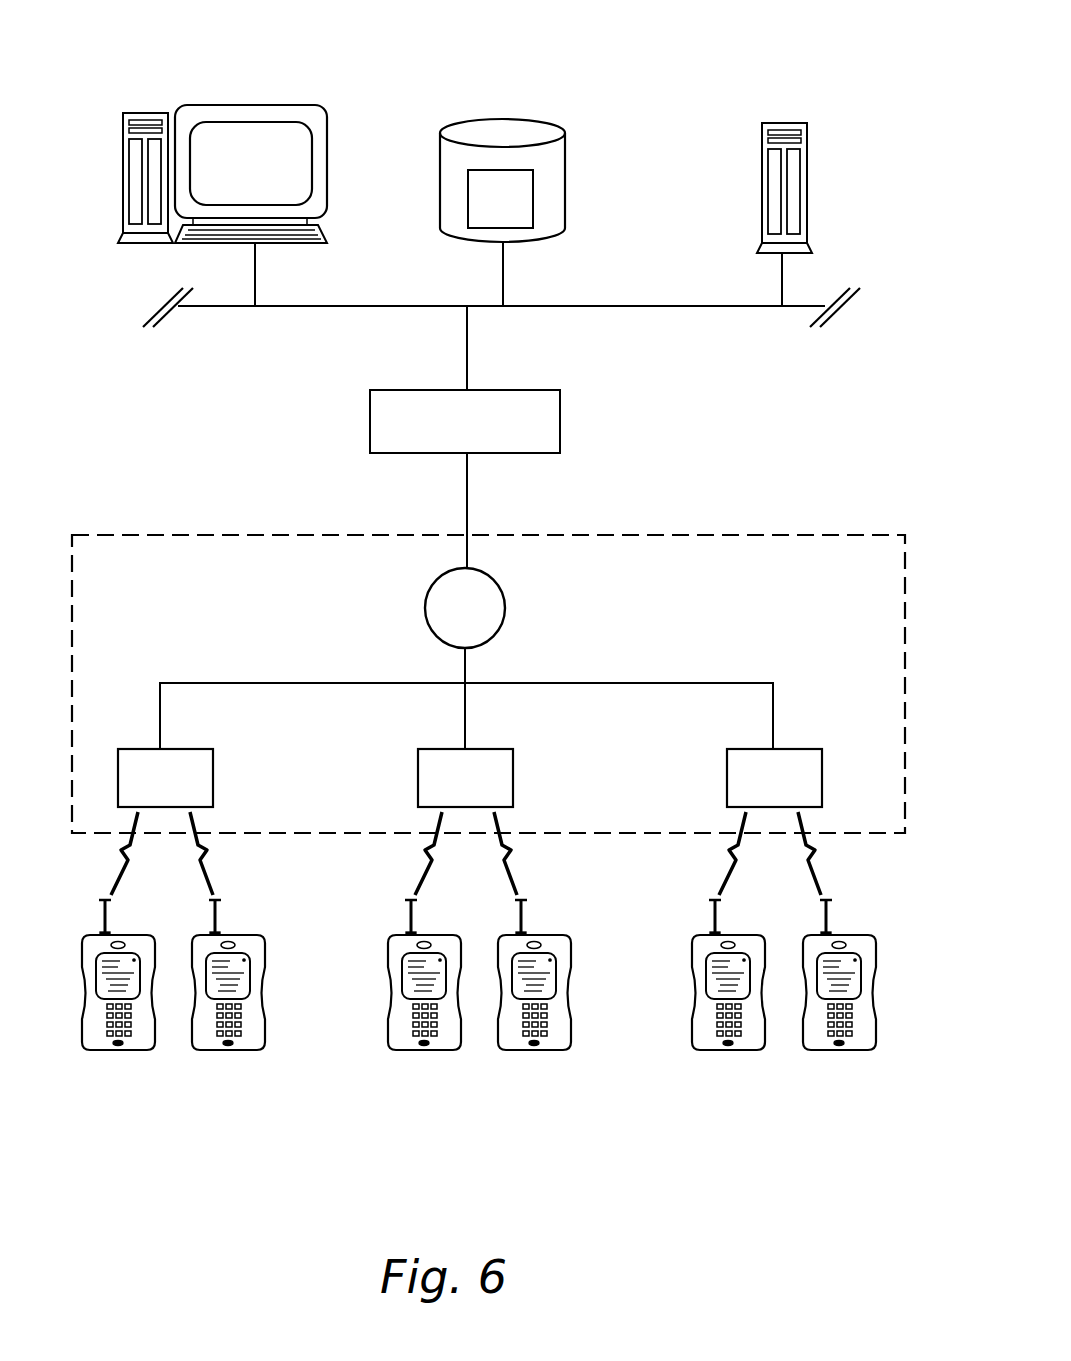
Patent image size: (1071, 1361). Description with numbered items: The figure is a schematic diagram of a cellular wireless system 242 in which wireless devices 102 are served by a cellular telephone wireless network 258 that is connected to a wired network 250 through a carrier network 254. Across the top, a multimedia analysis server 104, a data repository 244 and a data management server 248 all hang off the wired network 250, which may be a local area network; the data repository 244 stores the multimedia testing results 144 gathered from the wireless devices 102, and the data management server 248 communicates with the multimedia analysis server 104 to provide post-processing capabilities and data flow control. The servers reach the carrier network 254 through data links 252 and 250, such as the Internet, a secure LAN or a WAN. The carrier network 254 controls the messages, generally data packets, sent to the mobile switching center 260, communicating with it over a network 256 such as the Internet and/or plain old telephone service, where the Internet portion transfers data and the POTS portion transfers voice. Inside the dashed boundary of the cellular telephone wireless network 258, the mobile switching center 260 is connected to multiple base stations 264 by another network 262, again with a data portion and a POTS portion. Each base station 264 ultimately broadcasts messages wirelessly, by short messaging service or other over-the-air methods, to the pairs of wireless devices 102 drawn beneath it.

The cellular wireless system 242 is at (610, 68).
The multimedia analysis server 104 is at (327, 160).
The multimedia testing results 144 is at (500, 199).
The data repository 244 is at (535, 212).
The data management server 248 is at (762, 177).
The wired network 250 is at (730, 306).
The data link 252 is at (467, 360).
The carrier network 254 is at (465, 421).
The network 256 is at (467, 513).
The cellular telephone wireless network 258 is at (663, 535).
The mobile switching center 260 is at (505, 600).
The network 262 is at (620, 683).
The base station 264 is at (195, 749).
The wireless device 102 is at (130, 1050).